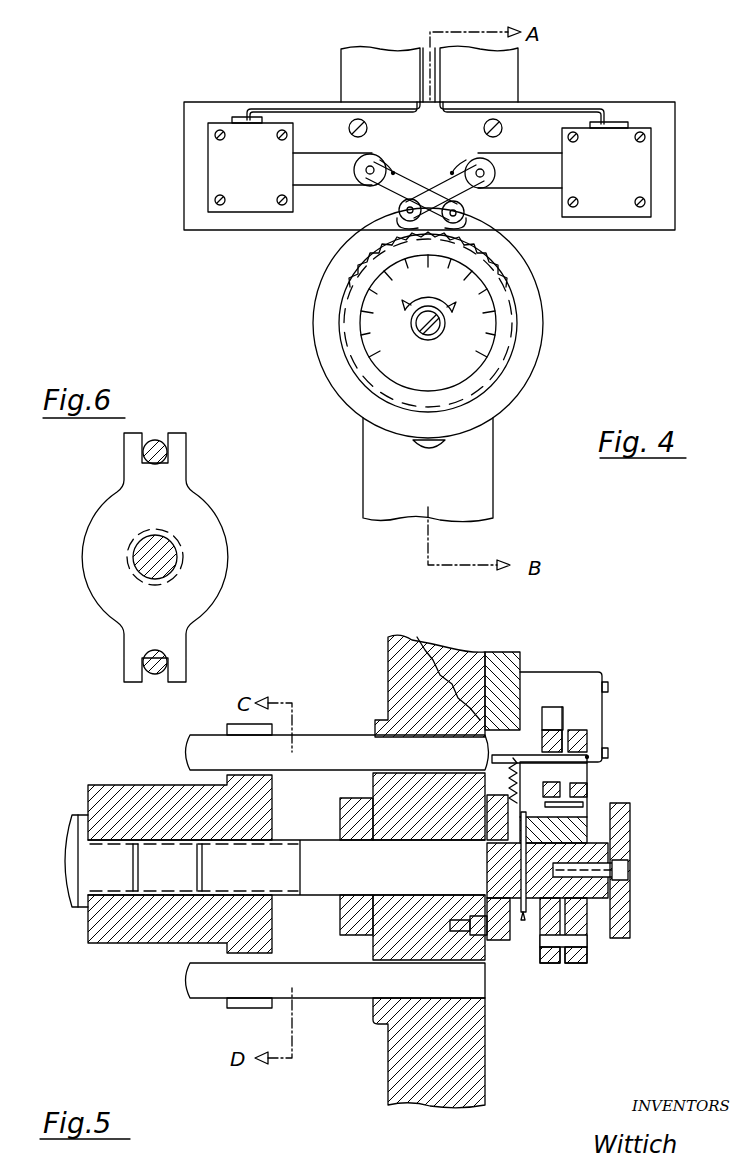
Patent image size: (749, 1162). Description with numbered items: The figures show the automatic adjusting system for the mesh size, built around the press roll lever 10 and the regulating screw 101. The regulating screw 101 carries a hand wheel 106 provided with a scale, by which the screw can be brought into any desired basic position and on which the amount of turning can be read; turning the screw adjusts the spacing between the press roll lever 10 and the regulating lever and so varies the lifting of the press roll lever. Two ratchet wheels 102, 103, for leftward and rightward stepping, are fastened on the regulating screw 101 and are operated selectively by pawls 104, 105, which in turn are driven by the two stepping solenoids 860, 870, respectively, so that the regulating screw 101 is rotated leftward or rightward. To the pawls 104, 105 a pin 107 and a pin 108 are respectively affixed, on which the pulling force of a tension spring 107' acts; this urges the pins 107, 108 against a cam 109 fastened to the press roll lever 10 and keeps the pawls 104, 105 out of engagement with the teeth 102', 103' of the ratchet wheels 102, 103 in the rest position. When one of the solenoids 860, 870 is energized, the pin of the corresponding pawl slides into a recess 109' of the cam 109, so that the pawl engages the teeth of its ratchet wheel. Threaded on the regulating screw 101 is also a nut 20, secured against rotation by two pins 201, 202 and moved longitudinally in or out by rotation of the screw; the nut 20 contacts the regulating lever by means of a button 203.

In FIG. 4, the press roll lever 10 is at (460, 485).
In FIG. 5, the press roll lever 10 is at (400, 1075).
In FIG. 6, the nut 20 is at (193, 600).
In FIG. 5, the nut 20 is at (140, 928).
In FIG. 6, the regulating screw 101 is at (211, 557).
In FIG. 5, the regulating screw 101 is at (286, 949).
In FIG. 4, the ratchet wheel 102 is at (372, 323).
In FIG. 5, the ratchet wheel 102 is at (600, 939).
In FIG. 4, the teeth of ratchet wheel 102 102' is at (537, 265).
In FIG. 5, the teeth of ratchet wheel 102 102' is at (596, 1000).
In FIG. 5, the ratchet wheel 103 is at (506, 1033).
In FIG. 4, the teeth of ratchet wheel 103 103' is at (351, 275).
In FIG. 5, the teeth of ratchet wheel 103 103' is at (570, 1023).
In FIG. 4, the pawl 104 is at (367, 158).
In FIG. 5, the pawl 104 is at (580, 740).
In FIG. 4, the pawl 105 is at (482, 160).
In FIG. 5, the pawl 105 is at (552, 718).
In FIG. 4, the hand wheel 106 is at (442, 375).
In FIG. 5, the hand wheel 106 is at (622, 927).
In FIG. 4, the pin 107 is at (556, 236).
In FIG. 5, the pin 107 is at (589, 778).
In FIG. 5, the tension spring 107' is at (555, 719).
In FIG. 4, the pin 108 is at (400, 212).
In FIG. 4, the cam 109 is at (453, 323).
In FIG. 5, the cam 109 is at (507, 978).
In FIG. 4, the recess 109' is at (270, 287).
In FIG. 5, the recess 109' is at (461, 721).
In FIG. 6, the pin 201 is at (158, 660).
In FIG. 5, the pin 201 is at (347, 985).
In FIG. 6, the pin 202 is at (163, 452).
In FIG. 5, the pin 202 is at (215, 755).
In FIG. 5, the button 203 is at (82, 897).
In FIG. 4, the stepping solenoid 860 is at (242, 170).
In FIG. 4, the stepping solenoid 870 is at (623, 178).
In FIG. 5, the stepping solenoid 870 is at (567, 682).